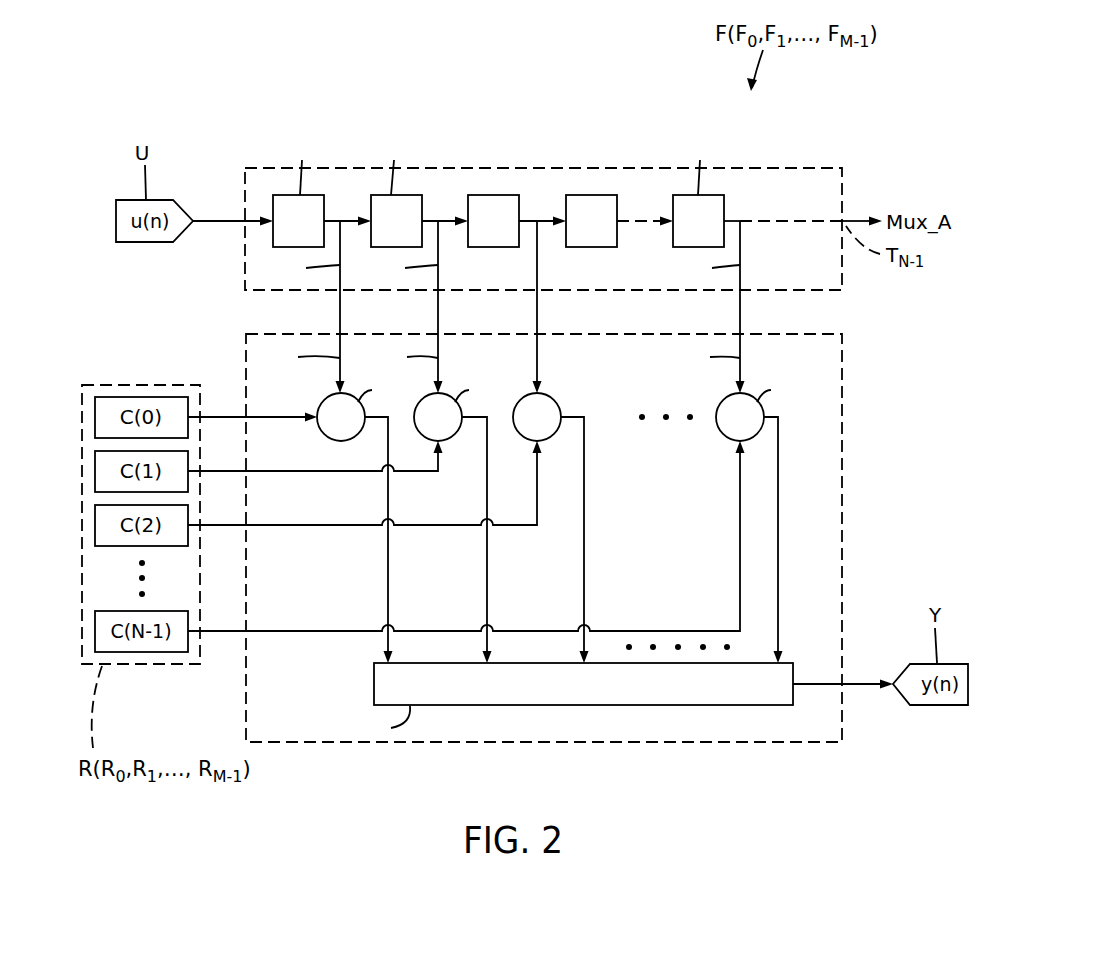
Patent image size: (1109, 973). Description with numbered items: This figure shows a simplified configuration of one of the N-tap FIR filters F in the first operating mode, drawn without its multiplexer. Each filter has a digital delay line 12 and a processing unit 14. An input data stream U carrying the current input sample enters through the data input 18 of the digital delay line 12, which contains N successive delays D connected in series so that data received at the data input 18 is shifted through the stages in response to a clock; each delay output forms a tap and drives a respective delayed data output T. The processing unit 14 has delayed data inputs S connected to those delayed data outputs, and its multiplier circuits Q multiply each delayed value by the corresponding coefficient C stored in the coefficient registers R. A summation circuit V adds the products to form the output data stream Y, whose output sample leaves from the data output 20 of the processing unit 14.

The digital delay line 12 is at (814, 167).
The processing unit 14 is at (843, 483).
The data input 18 is at (245, 221).
The data output 20 is at (843, 687).